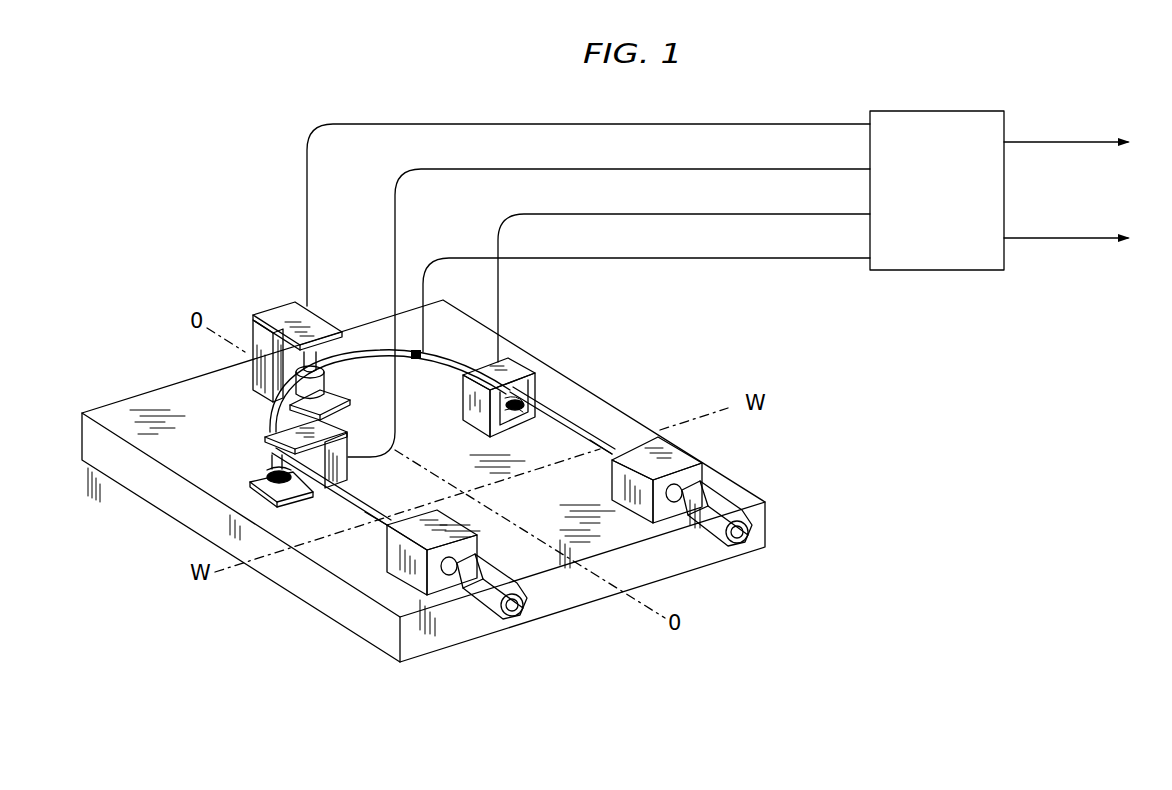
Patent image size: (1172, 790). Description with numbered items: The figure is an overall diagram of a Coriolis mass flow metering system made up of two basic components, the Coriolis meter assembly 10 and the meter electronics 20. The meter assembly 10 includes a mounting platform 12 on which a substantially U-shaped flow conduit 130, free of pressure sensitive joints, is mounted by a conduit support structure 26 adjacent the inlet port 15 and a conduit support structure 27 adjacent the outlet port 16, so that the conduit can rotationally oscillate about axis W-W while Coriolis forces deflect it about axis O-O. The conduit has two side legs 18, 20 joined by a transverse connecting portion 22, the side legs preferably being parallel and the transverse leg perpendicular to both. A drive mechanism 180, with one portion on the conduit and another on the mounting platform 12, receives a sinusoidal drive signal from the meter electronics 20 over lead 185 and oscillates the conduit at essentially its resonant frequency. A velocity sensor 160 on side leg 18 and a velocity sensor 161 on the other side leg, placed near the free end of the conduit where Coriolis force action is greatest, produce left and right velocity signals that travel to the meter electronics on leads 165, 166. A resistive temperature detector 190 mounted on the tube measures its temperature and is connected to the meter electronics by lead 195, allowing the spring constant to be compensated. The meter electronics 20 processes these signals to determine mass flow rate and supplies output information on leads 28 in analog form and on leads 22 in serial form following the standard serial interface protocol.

The Coriolis meter assembly 10 is at (163, 348).
The mounting platform 12 is at (190, 512).
The inlet port 15 is at (497, 580).
The outlet port 16 is at (725, 500).
The side leg 18 is at (333, 493).
The meter electronics 20 is at (576, 424).
The transverse connecting portion 22 is at (268, 416).
The conduit support structure 26 is at (450, 530).
The conduit support structure 27 is at (680, 460).
The leads 28 is at (1062, 238).
The U-shaped flow conduit 130 is at (362, 512).
The velocity sensor 160 is at (330, 426).
The velocity sensor 161 is at (488, 372).
The lead 165 is at (808, 167).
The lead 166 is at (808, 211).
The drive mechanism 180 is at (280, 313).
The lead 185 is at (808, 124).
The resistive temperature detector (RTD) 190 is at (419, 362).
The lead 195 is at (808, 256).